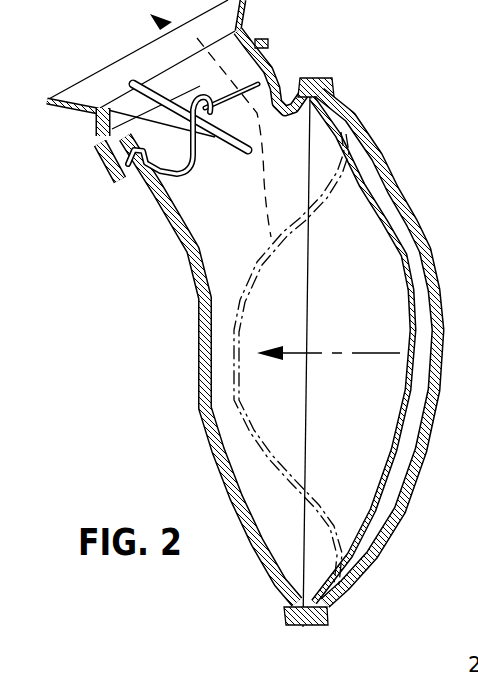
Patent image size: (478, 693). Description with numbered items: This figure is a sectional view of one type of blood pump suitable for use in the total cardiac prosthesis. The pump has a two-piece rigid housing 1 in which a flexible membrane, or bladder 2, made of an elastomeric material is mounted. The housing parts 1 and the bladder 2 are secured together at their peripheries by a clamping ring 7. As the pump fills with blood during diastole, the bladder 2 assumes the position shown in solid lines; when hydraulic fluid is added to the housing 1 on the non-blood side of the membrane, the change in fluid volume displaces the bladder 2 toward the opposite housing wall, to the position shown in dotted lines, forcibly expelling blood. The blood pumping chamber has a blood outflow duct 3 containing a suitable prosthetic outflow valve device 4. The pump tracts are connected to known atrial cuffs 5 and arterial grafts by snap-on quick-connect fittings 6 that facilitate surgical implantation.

The rigid housing 1 is at (392, 152).
The bladder 2 is at (401, 250).
The blood outflow duct 3 is at (160, 232).
The prosthetic outflow valve device 4 is at (158, 90).
The atrial cuff 5 is at (247, 9).
The snap-on quick-connect fitting 6 is at (268, 57).
The clamping ring 7 is at (315, 80).